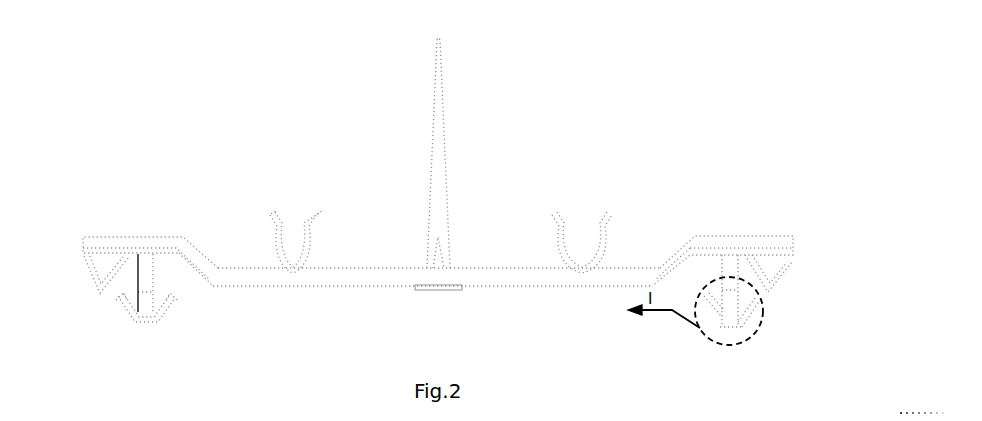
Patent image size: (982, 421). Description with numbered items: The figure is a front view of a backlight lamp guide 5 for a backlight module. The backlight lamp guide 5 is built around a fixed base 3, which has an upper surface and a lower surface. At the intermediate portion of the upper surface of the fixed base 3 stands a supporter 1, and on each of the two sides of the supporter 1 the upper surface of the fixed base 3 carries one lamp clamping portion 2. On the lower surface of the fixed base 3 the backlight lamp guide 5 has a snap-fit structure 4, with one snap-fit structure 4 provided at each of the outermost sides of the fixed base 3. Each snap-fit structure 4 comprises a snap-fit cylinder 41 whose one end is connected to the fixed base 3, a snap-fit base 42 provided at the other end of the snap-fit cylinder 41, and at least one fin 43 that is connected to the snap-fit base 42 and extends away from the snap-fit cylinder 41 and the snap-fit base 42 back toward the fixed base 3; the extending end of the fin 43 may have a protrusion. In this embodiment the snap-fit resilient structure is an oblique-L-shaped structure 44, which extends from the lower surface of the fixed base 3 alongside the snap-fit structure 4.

The supporter 1 is at (437, 127).
The lamp clamping portion 2 is at (315, 238).
The fixed base 3 is at (492, 274).
The snap-fit structure 4 is at (158, 317).
The backlight lamp guide 5 is at (523, 133).
The snap-fit cylinder 41 is at (733, 306).
The snap-fit base 42 is at (733, 323).
The fin 43 is at (720, 318).
The oblique-L-shaped structure 44 is at (782, 275).